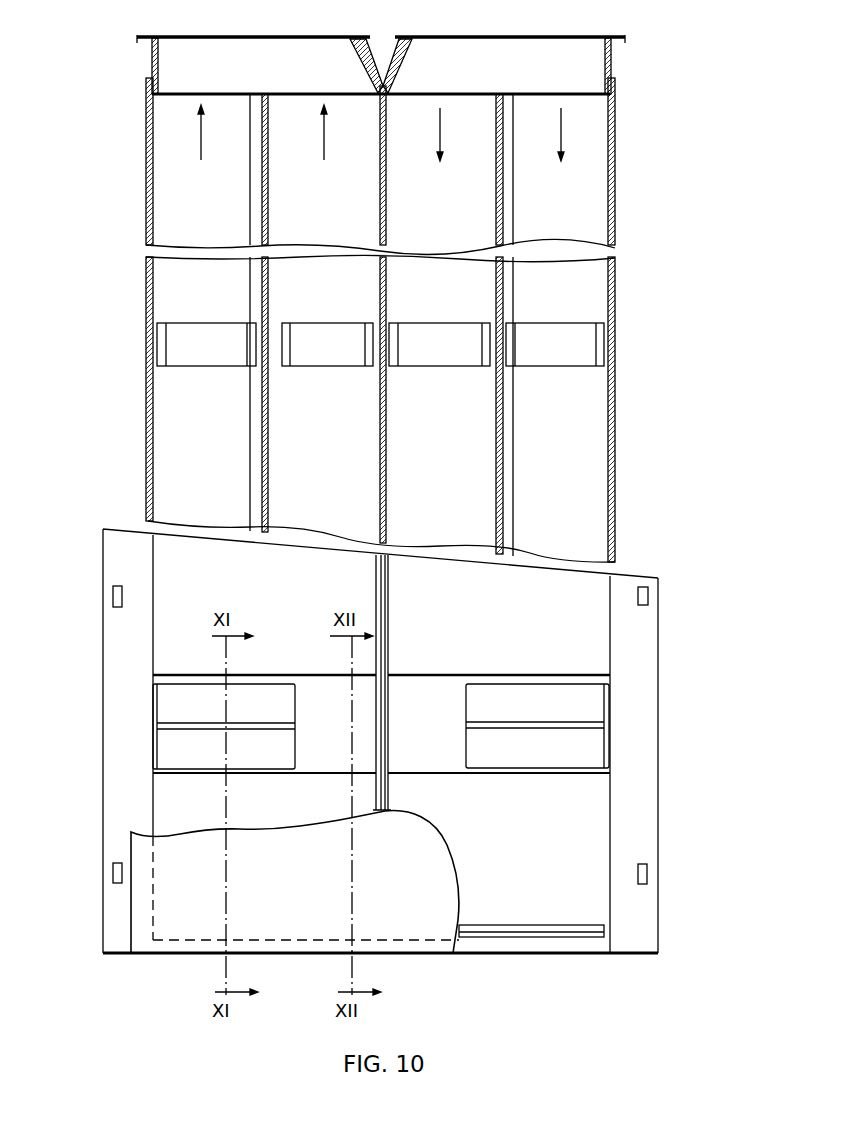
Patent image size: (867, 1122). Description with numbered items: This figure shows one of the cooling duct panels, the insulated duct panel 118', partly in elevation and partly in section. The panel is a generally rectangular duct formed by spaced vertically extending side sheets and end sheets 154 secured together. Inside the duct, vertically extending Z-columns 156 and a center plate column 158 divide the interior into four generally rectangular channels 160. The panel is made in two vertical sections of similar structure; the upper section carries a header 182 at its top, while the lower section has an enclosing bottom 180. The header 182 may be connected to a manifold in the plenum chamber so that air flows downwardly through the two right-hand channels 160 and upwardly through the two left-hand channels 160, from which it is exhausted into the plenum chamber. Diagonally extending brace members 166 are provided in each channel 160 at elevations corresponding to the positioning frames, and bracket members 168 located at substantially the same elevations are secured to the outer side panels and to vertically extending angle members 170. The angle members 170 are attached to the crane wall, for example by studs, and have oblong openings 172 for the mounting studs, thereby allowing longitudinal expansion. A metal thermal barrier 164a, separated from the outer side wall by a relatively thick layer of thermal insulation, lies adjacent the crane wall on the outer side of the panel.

The header 182 is at (409, 38).
The end sheets 154 is at (147, 420).
The Z-columns 156 is at (268, 422).
The center plate column 158 is at (387, 420).
The channels 160 is at (388, 147).
The brace members 166 is at (207, 322).
The insulated duct panel 118' is at (331, 744).
The bracket members 168 is at (297, 702).
The angle members 170 is at (103, 804).
The oblong openings 172 is at (112, 596).
The metal thermal barrier 164a is at (150, 945).
The enclosing bottom 180 is at (547, 946).